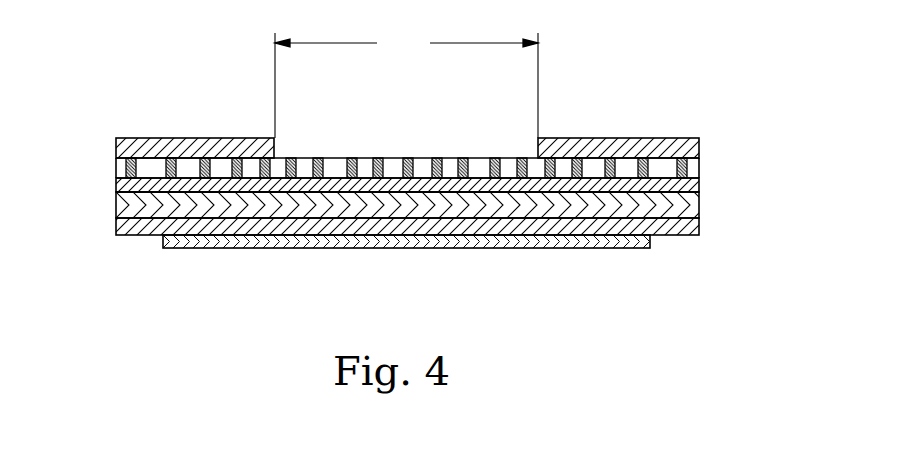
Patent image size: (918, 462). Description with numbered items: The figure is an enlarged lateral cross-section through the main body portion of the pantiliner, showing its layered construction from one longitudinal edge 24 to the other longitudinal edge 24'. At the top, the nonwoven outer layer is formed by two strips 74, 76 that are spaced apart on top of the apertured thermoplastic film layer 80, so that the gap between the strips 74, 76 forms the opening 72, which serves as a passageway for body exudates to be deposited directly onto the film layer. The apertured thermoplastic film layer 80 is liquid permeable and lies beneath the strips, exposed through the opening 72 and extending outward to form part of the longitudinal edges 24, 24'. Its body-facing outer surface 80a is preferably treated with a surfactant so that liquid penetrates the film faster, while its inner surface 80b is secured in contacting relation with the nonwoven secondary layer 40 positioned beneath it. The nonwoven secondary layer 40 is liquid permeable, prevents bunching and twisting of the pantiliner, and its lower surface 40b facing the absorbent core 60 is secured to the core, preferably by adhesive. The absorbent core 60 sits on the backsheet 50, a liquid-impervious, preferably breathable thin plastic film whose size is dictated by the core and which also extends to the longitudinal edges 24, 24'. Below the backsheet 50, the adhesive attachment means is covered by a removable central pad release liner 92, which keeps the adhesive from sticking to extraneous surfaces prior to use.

The strip 74 is at (197, 137).
The strip 76 is at (568, 138).
The opening 72 is at (406, 85).
The apertured thermoplastic film layer 80 is at (360, 157).
The outer surface 80a is at (443, 157).
The inner surface 80b is at (320, 185).
The longitudinal edge 24 is at (446, 173).
The longitudinal edge 24' is at (368, 167).
The absorbent core 60 is at (127, 202).
The backsheet 50 is at (133, 228).
The central pad release liner 92 is at (203, 250).
The nonwoven secondary layer 40 is at (417, 183).
The surface 40b is at (370, 192).